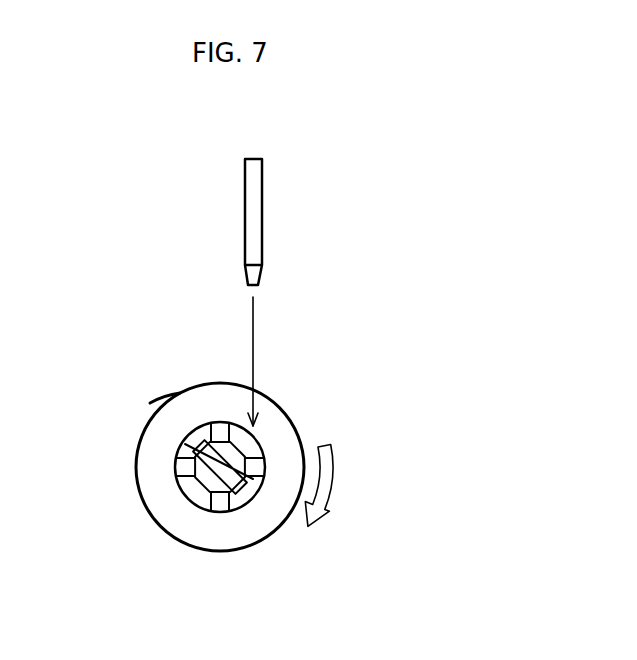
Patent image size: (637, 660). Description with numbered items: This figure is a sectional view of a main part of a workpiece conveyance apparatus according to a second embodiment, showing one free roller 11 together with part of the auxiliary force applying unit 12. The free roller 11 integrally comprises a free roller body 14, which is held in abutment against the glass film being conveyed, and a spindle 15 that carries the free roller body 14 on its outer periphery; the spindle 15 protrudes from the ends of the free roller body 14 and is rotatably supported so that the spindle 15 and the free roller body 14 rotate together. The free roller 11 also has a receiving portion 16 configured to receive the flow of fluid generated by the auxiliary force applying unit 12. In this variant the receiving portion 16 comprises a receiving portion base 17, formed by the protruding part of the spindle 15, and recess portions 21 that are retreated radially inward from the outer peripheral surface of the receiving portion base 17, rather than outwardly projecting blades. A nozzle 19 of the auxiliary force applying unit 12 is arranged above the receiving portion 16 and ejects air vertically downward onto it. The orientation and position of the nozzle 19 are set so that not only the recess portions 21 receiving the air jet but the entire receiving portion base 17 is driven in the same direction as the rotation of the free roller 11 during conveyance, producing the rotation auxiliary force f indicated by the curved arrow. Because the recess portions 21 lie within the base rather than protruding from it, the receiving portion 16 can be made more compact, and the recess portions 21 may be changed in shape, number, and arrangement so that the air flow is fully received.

The free roller 11 is at (213, 377).
The auxiliary force applying unit 12 is at (331, 343).
The free roller body 14 is at (146, 427).
The spindle 15 is at (218, 476).
The receiving portion 16 is at (148, 403).
The receiving portion base 17 is at (220, 513).
The nozzle 19 is at (254, 210).
The recess portion 21 is at (258, 462).
The rotation auxiliary force f is at (333, 477).